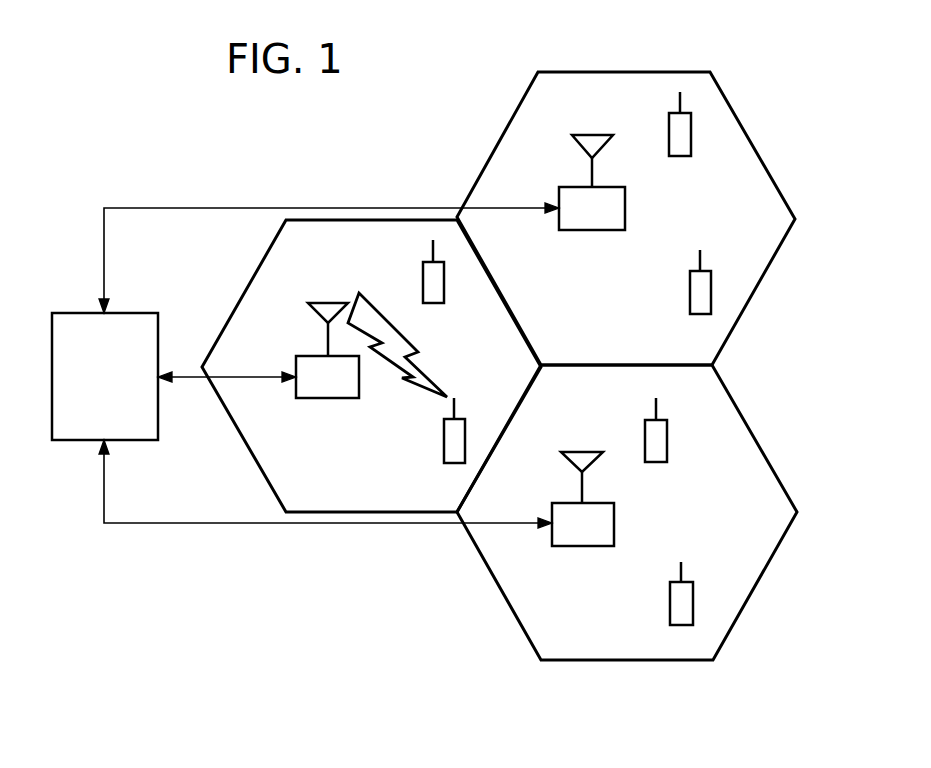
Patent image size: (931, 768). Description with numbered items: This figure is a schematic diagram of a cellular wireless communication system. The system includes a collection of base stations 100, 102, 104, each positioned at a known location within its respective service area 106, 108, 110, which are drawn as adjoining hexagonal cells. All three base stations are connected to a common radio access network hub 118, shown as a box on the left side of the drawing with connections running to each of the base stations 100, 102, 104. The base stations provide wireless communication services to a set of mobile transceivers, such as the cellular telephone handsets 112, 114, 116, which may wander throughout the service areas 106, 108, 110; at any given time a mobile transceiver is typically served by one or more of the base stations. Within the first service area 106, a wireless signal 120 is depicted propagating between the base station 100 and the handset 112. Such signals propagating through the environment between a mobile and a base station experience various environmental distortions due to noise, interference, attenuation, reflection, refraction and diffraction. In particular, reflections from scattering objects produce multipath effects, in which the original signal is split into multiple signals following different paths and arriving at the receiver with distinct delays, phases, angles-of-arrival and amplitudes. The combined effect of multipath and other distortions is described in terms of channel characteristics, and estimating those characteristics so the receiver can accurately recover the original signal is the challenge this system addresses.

The base station 100 is at (295, 358).
The base station 102 is at (558, 188).
The base station 104 is at (552, 508).
The service area 106 is at (262, 262).
The service area 108 is at (765, 278).
The service area 110 is at (770, 462).
The cellular telephone handset 112 is at (442, 448).
The cellular telephone handset 114 is at (680, 157).
The cellular telephone handset 116 is at (694, 590).
The radio access network hub 118 is at (143, 442).
The signal 120 is at (412, 358).